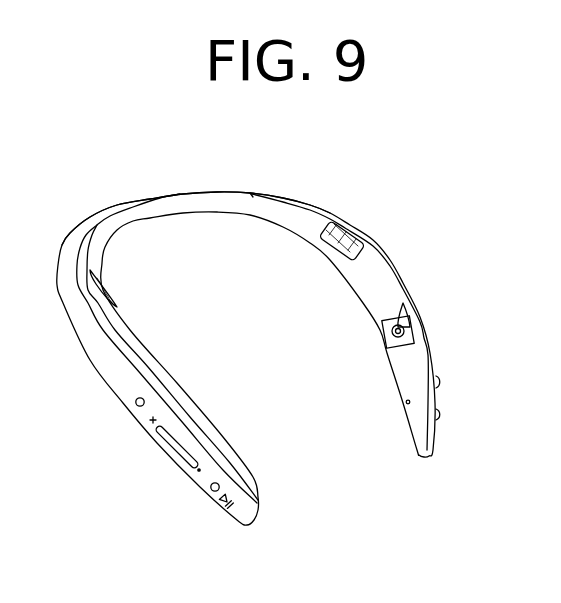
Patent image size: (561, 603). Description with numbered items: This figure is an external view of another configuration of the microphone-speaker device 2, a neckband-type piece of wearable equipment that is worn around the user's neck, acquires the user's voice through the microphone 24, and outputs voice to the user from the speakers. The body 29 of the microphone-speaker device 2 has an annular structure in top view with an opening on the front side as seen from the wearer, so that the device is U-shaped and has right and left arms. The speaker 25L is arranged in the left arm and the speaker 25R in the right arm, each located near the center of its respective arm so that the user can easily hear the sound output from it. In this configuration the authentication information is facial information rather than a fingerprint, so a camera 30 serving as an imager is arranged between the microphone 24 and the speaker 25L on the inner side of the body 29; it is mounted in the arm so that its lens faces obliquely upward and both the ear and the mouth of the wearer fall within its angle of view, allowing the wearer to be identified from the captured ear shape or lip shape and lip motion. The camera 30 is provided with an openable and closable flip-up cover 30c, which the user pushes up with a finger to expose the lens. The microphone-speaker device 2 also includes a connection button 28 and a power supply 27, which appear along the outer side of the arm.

The microphone-speaker device 2 is at (338, 163).
The body 29 is at (163, 198).
The speaker 25R is at (112, 290).
The speaker 25L is at (335, 247).
The camera 30 is at (384, 335).
The cover 30c is at (412, 312).
The connection button 28 is at (441, 382).
The power supply 27 is at (441, 414).
The microphone 24 is at (405, 402).